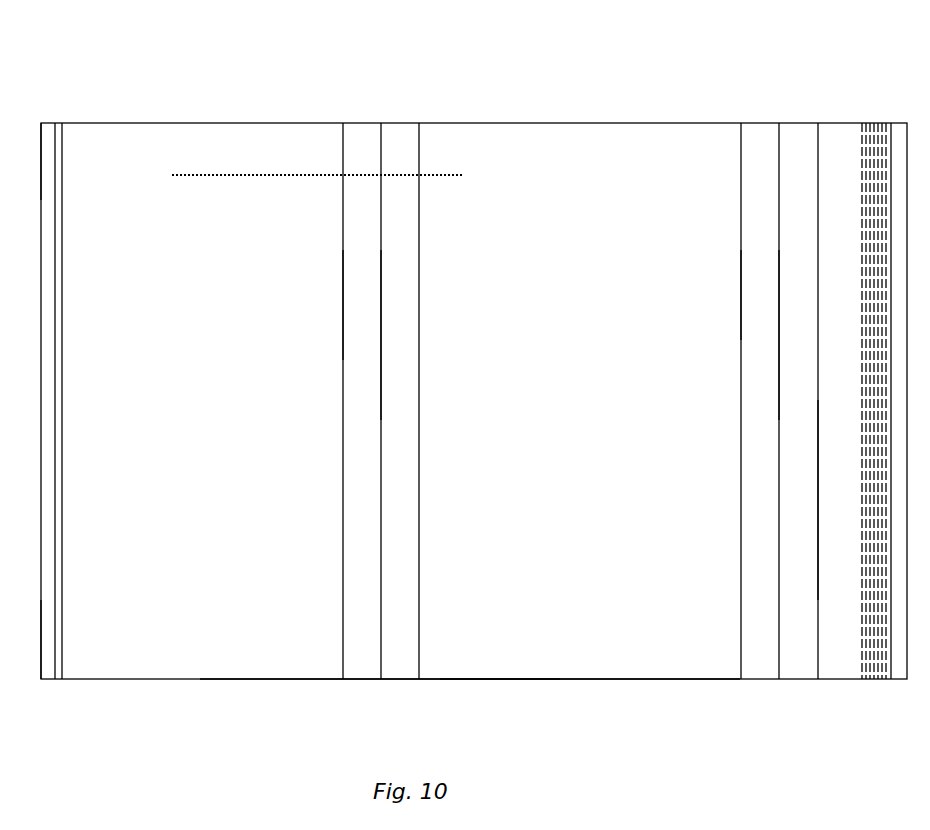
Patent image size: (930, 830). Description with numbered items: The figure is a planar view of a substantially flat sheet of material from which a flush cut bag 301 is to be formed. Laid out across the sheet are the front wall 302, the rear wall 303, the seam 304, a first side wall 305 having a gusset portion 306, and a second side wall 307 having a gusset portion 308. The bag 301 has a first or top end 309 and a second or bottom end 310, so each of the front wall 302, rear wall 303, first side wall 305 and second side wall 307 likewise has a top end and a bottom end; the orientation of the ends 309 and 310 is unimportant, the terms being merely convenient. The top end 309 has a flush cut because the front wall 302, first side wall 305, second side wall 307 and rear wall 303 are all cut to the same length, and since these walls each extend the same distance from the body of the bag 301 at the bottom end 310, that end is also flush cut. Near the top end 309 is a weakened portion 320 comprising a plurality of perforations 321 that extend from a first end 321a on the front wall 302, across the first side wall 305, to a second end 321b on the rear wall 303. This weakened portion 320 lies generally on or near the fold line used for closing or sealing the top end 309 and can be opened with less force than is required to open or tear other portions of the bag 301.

The flush cut bag 301 is at (504, 62).
The front wall 302 is at (570, 650).
The rear wall 303 is at (193, 625).
The seam 304 is at (872, 180).
The first side wall 305 is at (395, 329).
The gusset portion 306 is at (380, 377).
The second side wall 307 is at (805, 282).
The gusset portion 308 is at (779, 373).
The top end 309 is at (38, 121).
The bottom end 310 is at (37, 683).
The weakened portion 320 is at (297, 183).
The perforations 321 is at (233, 177).
The first end 321a is at (462, 176).
The second end 321b is at (171, 177).